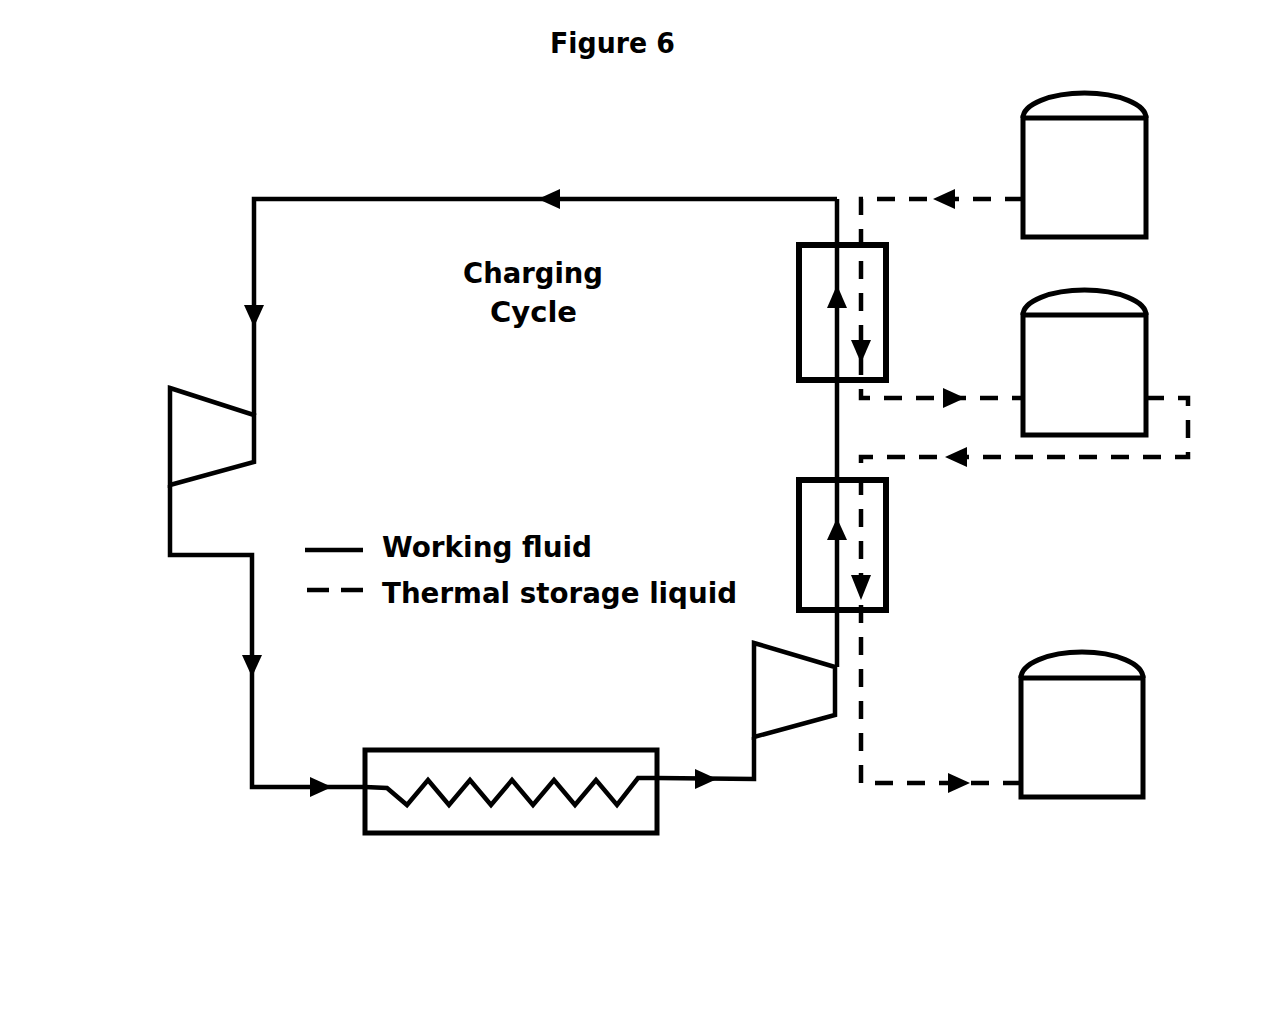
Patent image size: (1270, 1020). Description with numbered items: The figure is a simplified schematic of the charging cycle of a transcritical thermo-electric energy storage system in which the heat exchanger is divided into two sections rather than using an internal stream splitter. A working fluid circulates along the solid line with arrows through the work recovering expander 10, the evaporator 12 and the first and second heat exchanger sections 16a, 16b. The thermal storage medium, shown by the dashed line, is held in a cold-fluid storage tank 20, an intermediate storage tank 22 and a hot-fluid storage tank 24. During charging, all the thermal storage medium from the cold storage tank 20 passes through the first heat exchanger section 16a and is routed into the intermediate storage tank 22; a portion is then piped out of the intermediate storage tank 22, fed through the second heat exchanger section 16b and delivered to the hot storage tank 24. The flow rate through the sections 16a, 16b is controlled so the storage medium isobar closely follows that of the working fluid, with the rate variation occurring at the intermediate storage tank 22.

The work recovering expander 10 is at (170, 435).
The evaporator 12 is at (493, 833).
The first heat exchanger section 16a is at (799, 304).
The second heat exchanger section 16b is at (799, 533).
The cold-fluid storage tank 20 is at (1148, 180).
The intermediate storage tank 22 is at (1148, 362).
The hot-fluid storage tank 24 is at (1145, 737).